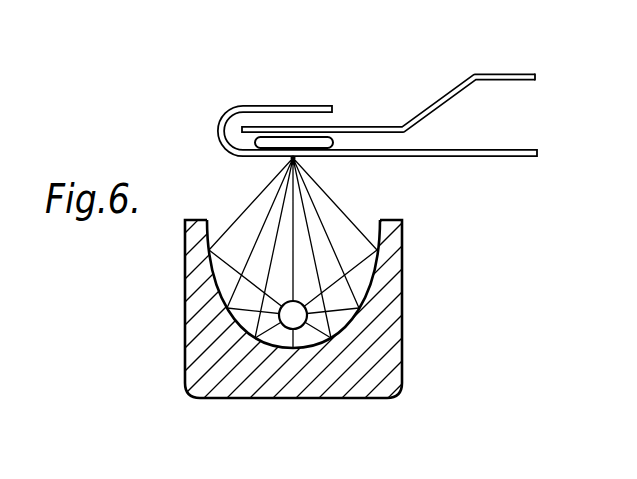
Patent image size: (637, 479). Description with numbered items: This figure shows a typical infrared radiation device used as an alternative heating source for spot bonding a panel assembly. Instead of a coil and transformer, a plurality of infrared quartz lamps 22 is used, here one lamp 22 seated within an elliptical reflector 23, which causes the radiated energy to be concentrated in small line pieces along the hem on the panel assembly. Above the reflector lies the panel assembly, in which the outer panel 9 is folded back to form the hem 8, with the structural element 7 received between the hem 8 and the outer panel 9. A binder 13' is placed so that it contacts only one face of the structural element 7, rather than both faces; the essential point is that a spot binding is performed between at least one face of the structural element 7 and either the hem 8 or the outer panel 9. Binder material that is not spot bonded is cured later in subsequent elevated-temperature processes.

The structural element 7 is at (463, 88).
The hem 8 is at (276, 108).
The outer panel 9 is at (498, 152).
The binder 13' is at (259, 169).
The infrared quartz lamp 22 is at (289, 323).
The elliptical reflector 23 is at (393, 325).